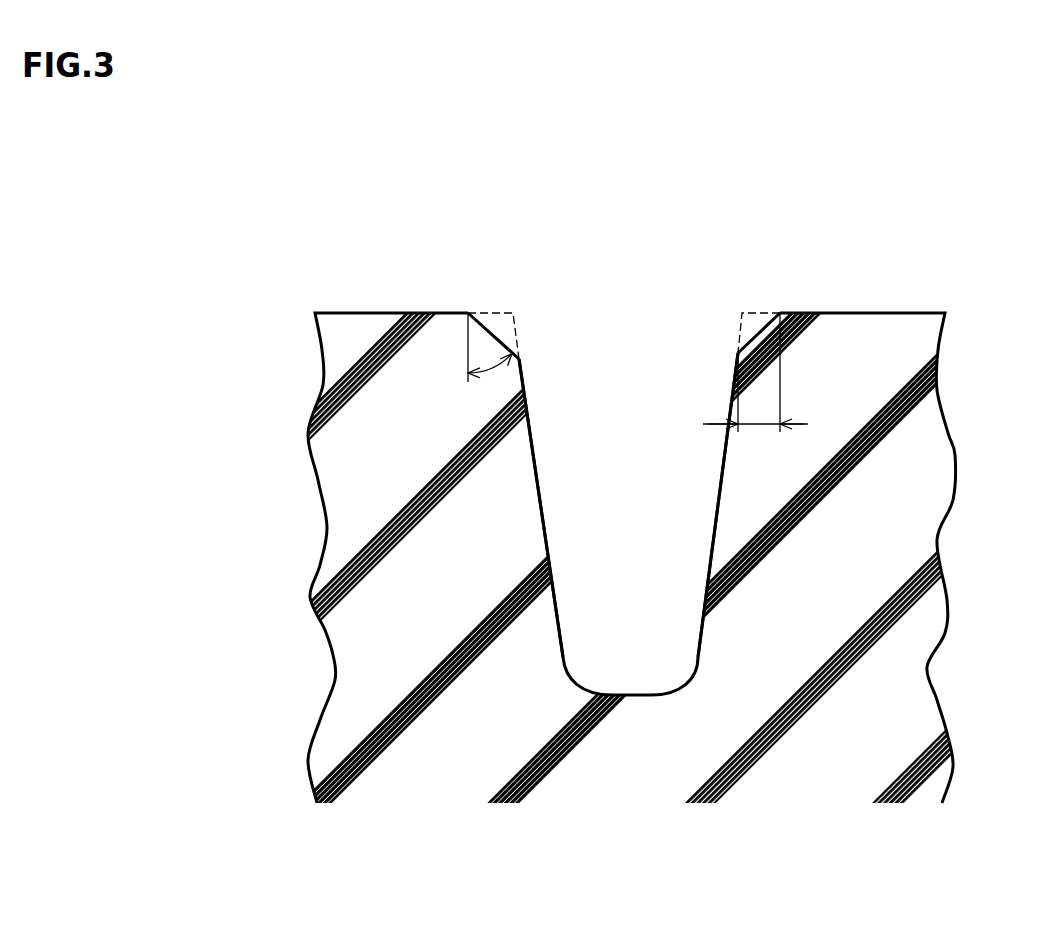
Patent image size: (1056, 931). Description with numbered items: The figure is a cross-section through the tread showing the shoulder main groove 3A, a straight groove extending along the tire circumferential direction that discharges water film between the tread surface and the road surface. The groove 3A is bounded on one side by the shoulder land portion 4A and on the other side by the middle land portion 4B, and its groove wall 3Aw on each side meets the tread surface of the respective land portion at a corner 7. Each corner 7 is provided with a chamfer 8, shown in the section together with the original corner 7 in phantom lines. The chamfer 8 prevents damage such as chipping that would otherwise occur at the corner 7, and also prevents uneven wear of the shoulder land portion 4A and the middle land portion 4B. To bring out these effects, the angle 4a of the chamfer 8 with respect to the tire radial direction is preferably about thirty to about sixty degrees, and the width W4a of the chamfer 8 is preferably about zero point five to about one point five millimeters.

The shoulder land portion 4A is at (406, 311).
The middle land portion 4B is at (879, 311).
The shoulder main groove 3A is at (627, 342).
The groove wall 3Aw is at (539, 474).
The angle of the chamfer 4a is at (498, 366).
The corner 7 is at (515, 310).
The chamfer 8 is at (491, 333).
The width of the chamfer W4a is at (757, 427).